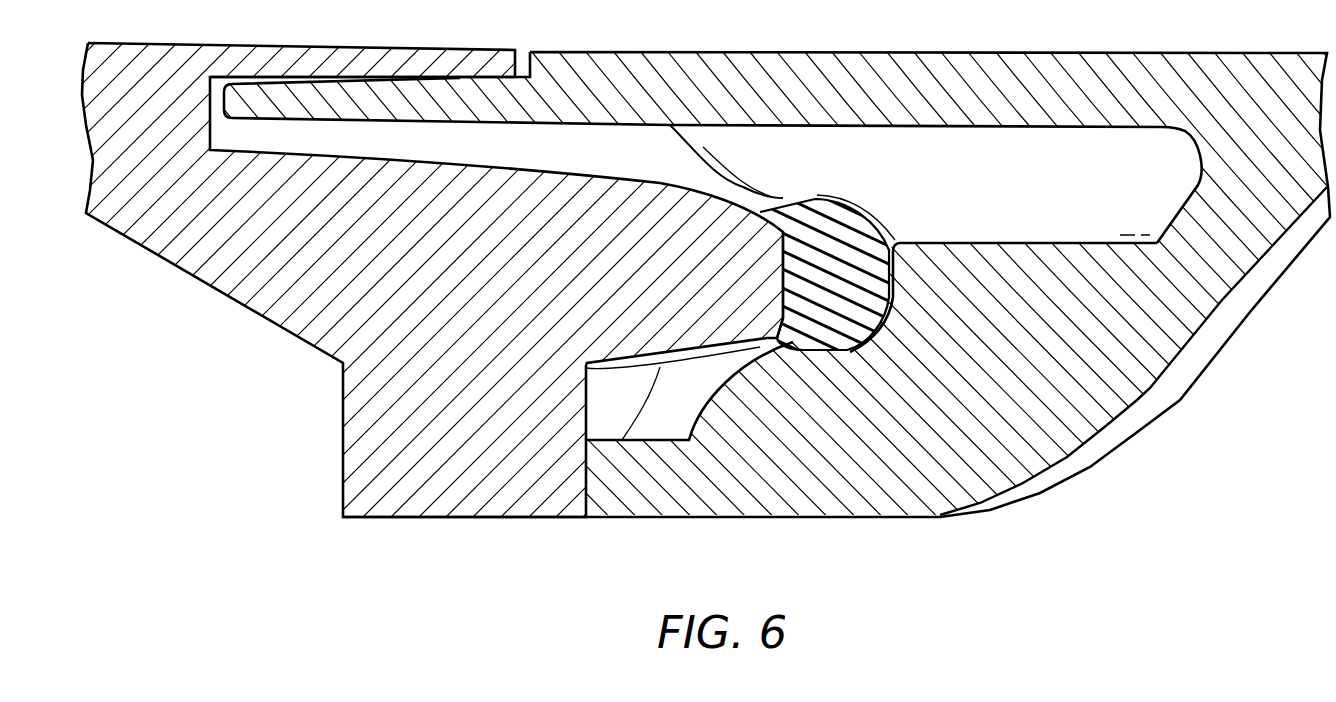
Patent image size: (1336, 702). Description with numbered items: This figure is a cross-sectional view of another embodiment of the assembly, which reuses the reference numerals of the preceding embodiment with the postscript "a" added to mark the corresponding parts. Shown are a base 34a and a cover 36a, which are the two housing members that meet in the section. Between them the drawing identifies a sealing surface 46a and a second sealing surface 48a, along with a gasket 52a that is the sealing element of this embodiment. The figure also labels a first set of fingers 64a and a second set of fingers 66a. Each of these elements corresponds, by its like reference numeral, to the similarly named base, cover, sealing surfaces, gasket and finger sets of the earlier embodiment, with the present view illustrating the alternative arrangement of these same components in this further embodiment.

The base 34a is at (430, 518).
The cover 36a is at (863, 518).
The sealing surface 46a is at (783, 278).
The sealing surface 48a is at (892, 268).
The gasket 52a is at (843, 222).
The first set of fingers 64a is at (843, 152).
The second set of fingers 66a is at (660, 423).